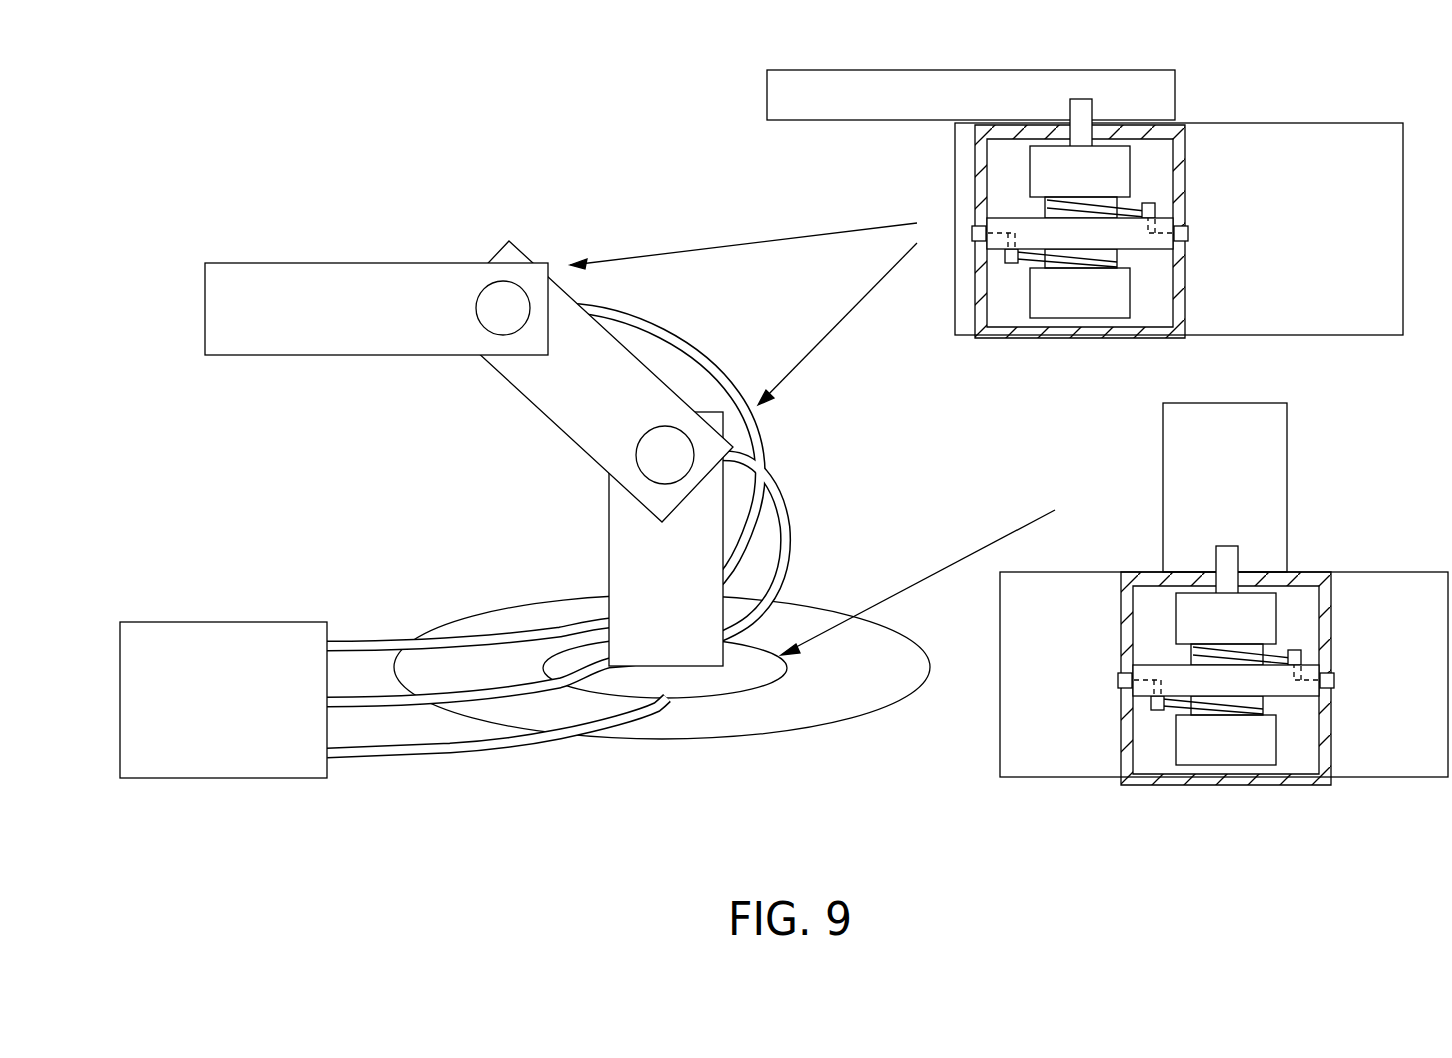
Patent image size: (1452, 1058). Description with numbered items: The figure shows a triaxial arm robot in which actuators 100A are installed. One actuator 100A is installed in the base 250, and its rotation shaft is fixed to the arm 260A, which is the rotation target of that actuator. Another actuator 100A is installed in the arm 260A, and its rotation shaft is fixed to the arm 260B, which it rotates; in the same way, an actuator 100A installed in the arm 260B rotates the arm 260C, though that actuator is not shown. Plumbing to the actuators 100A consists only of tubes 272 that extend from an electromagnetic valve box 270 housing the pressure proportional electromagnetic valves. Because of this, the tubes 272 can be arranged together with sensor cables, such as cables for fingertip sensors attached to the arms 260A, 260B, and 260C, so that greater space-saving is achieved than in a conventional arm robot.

The actuator 100A is at (1207, 192).
The base 250 is at (788, 733).
The arm 260A is at (615, 540).
The arm 260B is at (558, 422).
The arm 260C is at (362, 275).
The electromagnetic valve box 270 is at (255, 622).
The tubes 272 is at (363, 642).